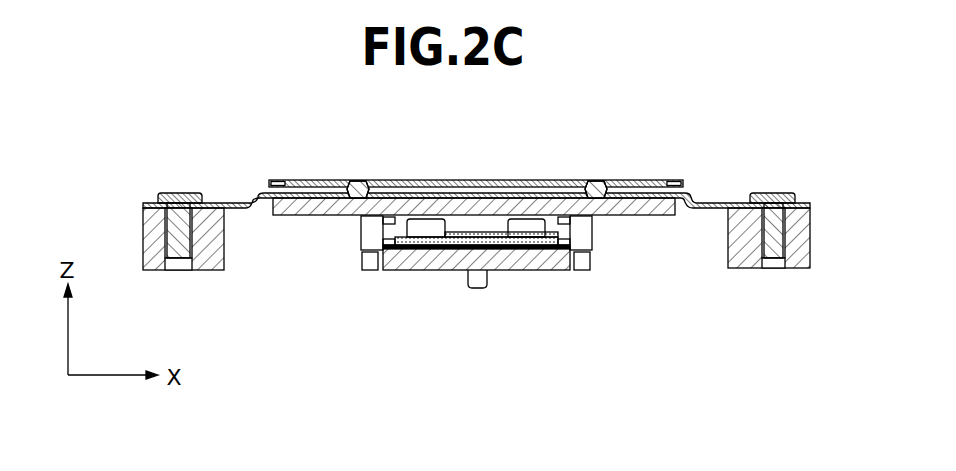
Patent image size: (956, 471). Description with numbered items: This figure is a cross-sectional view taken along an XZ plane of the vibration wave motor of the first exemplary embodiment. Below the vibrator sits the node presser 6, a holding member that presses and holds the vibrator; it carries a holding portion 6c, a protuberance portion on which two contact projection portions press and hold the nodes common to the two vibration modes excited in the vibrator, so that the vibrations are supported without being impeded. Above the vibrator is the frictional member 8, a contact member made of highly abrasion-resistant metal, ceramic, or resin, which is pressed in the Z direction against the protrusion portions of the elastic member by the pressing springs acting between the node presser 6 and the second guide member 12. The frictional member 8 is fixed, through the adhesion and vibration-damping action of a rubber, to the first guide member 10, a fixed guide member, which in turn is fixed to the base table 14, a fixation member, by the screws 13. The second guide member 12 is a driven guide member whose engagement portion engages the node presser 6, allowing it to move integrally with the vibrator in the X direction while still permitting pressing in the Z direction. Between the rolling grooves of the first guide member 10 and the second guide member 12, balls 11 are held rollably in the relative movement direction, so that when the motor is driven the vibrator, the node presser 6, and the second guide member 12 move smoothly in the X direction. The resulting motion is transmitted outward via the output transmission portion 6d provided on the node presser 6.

The node presser 6 is at (510, 281).
The holding portion 6c is at (567, 243).
The output transmission portion 6d is at (477, 289).
The frictional member 8 is at (312, 217).
The first guide member 10 is at (715, 202).
The ball 11 is at (353, 180).
The second guide member 12 is at (500, 180).
The screw 13 is at (178, 192).
The base table 14 is at (745, 268).